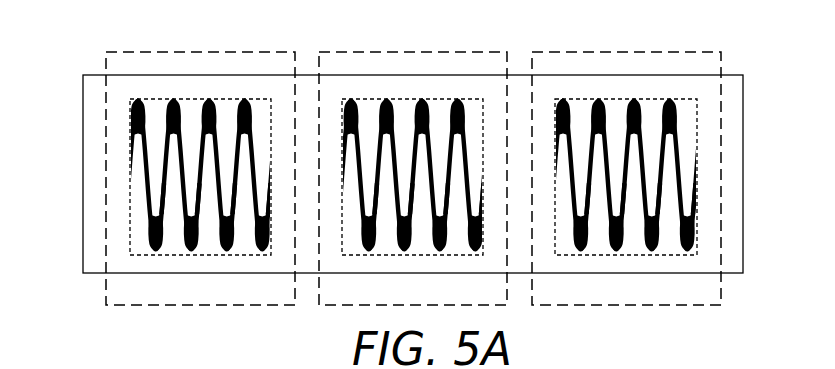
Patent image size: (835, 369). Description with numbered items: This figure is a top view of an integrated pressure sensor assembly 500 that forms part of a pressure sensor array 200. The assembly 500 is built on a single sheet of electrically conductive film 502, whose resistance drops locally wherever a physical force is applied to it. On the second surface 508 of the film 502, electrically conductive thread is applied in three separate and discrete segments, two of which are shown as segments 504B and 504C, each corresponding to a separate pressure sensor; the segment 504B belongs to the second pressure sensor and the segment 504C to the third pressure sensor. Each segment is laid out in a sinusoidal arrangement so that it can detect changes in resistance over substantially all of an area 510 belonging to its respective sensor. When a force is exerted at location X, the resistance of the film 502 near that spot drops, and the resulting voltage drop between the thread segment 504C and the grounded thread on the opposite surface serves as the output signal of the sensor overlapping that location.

The pressure sensor array 200 is at (59, 105).
The integrated pressure sensor assembly 500 is at (697, 75).
The electrically conductive film 502 is at (280, 261).
The electrically conductive thread segment 504B is at (157, 256).
The electrically conductive thread segment 504C is at (425, 98).
The second surface 508 is at (112, 156).
The area 510 is at (130, 212).